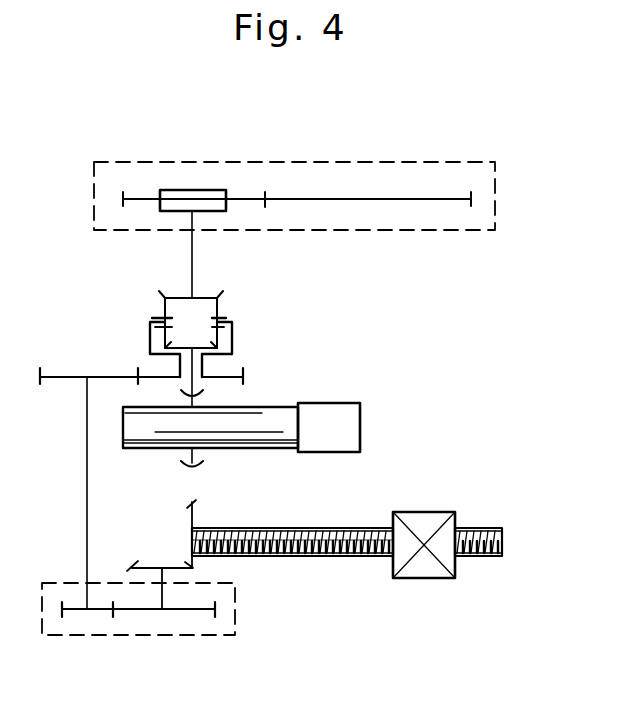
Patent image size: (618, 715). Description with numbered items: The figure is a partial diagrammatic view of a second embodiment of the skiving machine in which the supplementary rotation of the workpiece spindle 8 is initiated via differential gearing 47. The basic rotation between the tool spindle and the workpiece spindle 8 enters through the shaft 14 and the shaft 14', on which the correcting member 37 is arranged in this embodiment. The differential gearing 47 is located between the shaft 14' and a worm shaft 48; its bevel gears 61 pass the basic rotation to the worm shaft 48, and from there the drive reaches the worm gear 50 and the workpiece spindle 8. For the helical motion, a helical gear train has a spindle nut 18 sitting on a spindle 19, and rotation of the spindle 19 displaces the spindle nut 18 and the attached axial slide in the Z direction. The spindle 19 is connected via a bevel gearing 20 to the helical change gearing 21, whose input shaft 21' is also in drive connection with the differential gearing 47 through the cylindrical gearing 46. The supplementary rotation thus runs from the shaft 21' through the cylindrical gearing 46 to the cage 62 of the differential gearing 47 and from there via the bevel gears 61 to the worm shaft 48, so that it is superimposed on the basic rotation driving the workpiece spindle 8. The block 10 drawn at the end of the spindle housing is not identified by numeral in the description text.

The workpiece spindle 8 is at (317, 450).
The drive motor 10 is at (343, 430).
The shaft 14 is at (294, 169).
The shaft 14' is at (116, 254).
The spindle nut 18 is at (430, 563).
The spindle 19 is at (333, 557).
The bevel gearing 20 is at (195, 565).
The helical change gearing 21 is at (138, 637).
The input shaft 21' is at (49, 493).
The correcting member 37 is at (197, 188).
The cylindrical gearing 46 is at (138, 374).
The differential gearing 47 is at (190, 315).
The worm shaft 48 is at (243, 380).
The worm gear 50 is at (187, 457).
The bevel gears 61 is at (200, 348).
The cage 62 is at (233, 346).